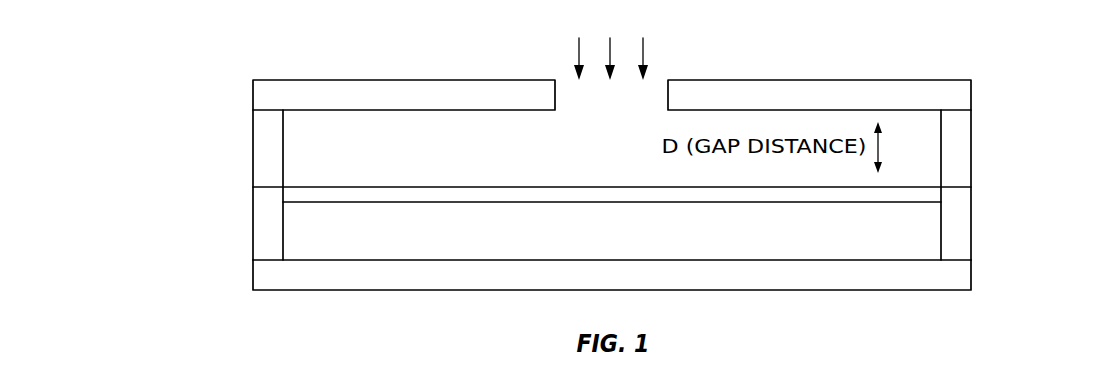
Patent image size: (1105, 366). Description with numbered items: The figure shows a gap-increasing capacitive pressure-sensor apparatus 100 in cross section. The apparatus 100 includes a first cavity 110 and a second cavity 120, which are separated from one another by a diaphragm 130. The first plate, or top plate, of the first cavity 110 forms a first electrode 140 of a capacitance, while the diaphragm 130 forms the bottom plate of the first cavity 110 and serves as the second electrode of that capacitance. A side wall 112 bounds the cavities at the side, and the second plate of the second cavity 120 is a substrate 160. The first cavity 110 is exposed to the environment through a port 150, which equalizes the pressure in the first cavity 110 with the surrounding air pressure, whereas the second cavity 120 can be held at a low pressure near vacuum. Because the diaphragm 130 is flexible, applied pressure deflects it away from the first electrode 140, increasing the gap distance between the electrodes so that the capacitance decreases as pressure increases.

The gap-increasing capacitive pressure-sensor apparatus 100 is at (211, 7).
The first cavity 110 is at (879, 148).
The side wall 112 is at (957, 158).
The second cavity 120 is at (878, 229).
The diaphragm 130 is at (387, 195).
The first electrode 140 is at (303, 97).
The port 150 is at (704, 49).
The substrate 160 is at (905, 273).